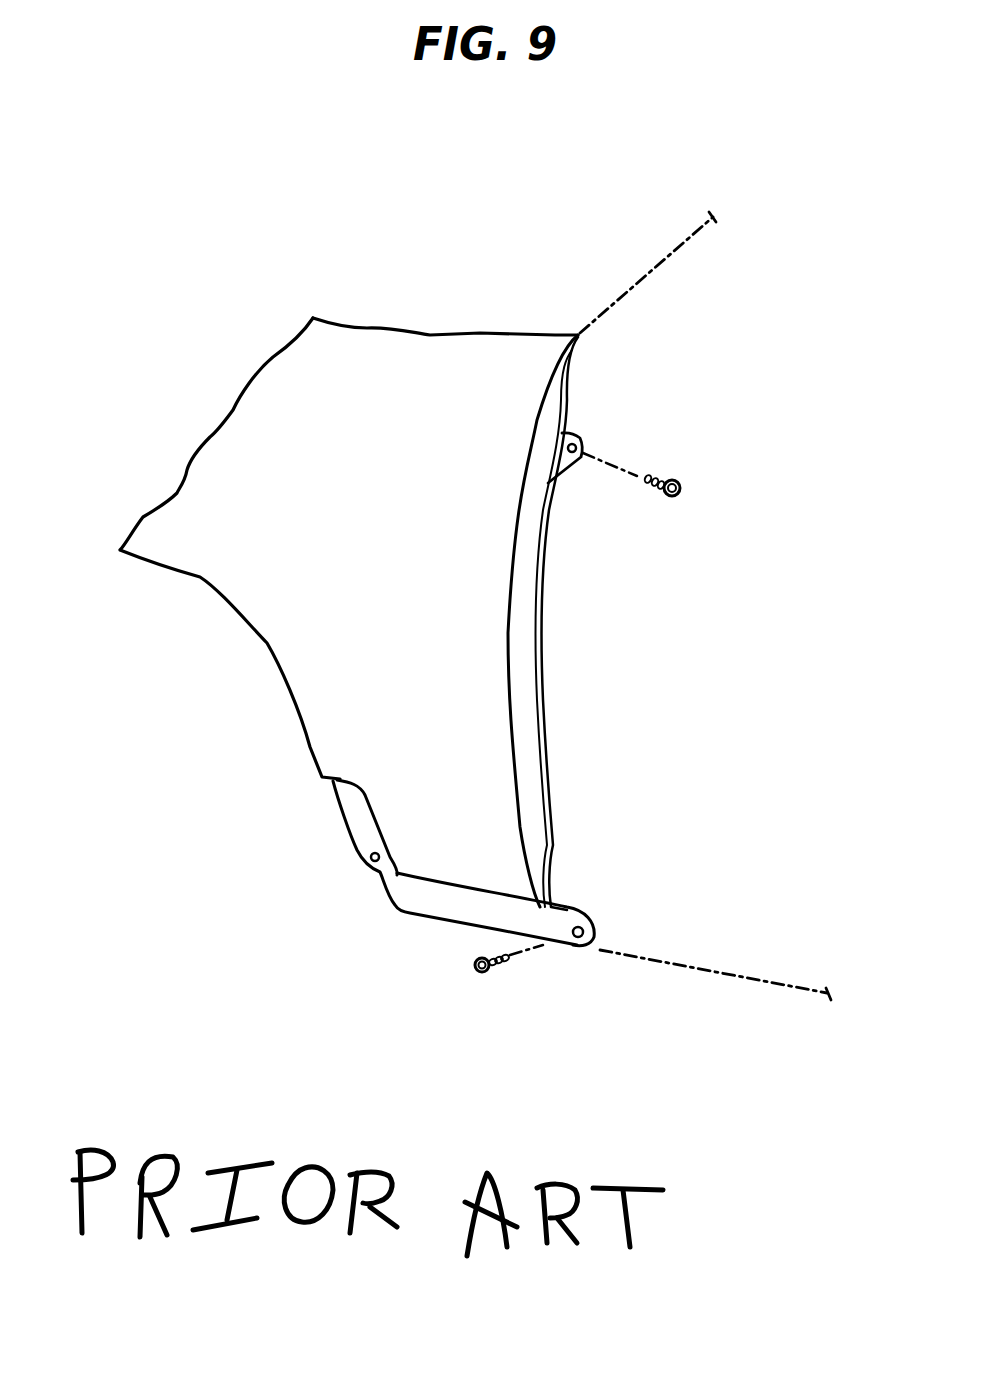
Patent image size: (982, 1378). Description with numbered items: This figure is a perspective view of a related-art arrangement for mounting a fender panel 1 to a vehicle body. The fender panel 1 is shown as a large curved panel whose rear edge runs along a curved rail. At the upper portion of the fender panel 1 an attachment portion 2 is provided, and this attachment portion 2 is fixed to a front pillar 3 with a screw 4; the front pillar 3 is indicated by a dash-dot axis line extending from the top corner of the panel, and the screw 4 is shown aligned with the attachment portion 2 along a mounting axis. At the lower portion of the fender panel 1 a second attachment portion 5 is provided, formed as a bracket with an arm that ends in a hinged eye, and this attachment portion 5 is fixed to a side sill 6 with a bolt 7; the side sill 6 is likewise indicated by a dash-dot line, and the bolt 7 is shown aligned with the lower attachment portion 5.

The fender panel 1 is at (230, 448).
The attachment portion 2 is at (578, 436).
The front pillar 3 is at (660, 257).
The screw 4 is at (675, 478).
The attachment portion 5 is at (573, 910).
The side sill 6 is at (733, 975).
The bolt 7 is at (490, 973).